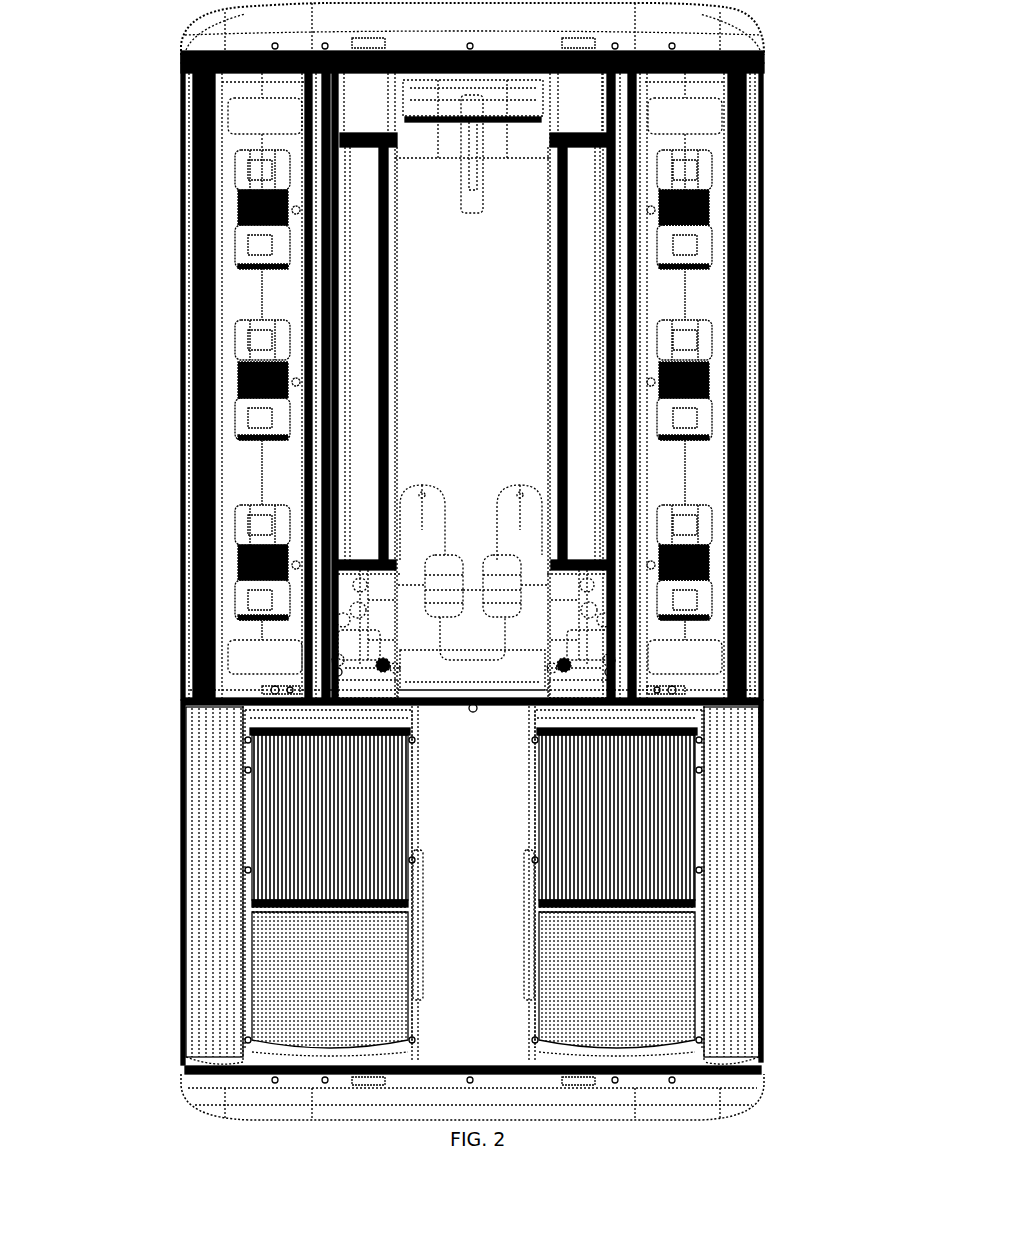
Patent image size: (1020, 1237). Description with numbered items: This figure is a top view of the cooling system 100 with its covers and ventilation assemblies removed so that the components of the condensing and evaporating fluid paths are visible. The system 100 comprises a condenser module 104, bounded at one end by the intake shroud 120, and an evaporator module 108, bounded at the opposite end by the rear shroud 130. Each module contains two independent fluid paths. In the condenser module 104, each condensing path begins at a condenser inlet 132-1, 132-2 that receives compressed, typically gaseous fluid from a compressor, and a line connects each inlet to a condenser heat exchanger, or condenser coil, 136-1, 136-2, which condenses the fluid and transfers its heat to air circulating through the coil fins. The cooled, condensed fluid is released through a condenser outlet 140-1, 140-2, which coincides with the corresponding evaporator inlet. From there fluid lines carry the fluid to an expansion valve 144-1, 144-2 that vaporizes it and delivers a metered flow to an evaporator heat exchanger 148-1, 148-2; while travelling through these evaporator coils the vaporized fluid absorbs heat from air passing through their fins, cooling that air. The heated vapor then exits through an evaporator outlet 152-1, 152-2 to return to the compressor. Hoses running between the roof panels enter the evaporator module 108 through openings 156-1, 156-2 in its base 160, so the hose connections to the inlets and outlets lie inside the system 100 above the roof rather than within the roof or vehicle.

The system 100 is at (148, 100).
The condenser module 104 is at (176, 910).
The evaporator module 108 is at (175, 320).
The intake shroud 120 is at (198, 1083).
The rear shroud 130 is at (768, 30).
The condenser inlet 132-1 is at (268, 688).
The condenser inlet 132-2 is at (680, 688).
The condenser heat exchanger 136-1 is at (285, 820).
The condenser heat exchanger 136-2 is at (665, 828).
The condenser outlet 140-1 is at (400, 713).
The condenser outlet 140-2 is at (548, 713).
The expansion valve 144-1 is at (350, 615).
The expansion valve 144-2 is at (597, 615).
The evaporator heat exchanger 148-1 is at (372, 405).
The evaporator heat exchanger 148-2 is at (577, 457).
The evaporator outlet 152-1 is at (336, 655).
The evaporator outlet 152-2 is at (613, 655).
The opening 156-1 is at (245, 655).
The opening 156-2 is at (700, 660).
The base 160 is at (400, 301).